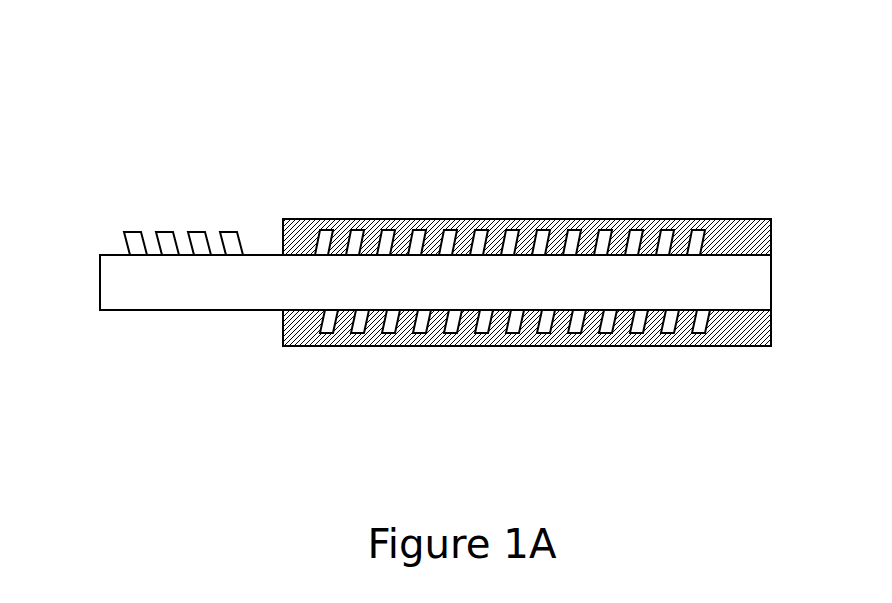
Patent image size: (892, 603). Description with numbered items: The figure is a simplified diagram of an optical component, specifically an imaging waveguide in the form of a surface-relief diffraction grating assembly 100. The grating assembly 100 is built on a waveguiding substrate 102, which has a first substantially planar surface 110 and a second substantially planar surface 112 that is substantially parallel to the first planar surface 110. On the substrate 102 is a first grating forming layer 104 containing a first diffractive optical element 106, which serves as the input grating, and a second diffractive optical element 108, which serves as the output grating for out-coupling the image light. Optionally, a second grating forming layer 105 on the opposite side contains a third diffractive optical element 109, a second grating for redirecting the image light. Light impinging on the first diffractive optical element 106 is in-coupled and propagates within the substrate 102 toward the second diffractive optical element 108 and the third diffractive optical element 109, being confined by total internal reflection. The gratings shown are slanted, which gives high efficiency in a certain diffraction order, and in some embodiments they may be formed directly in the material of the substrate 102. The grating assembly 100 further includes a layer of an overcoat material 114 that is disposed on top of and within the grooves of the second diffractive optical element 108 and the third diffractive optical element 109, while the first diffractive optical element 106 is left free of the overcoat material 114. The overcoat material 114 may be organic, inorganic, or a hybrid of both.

The surface-relief diffraction grating assembly 100 is at (647, 122).
The substrate 102 is at (455, 297).
The first grating forming layer 104 is at (370, 199).
The second grating forming layer 105 is at (370, 376).
The first diffractive optical element 106 is at (122, 193).
The second diffractive optical element 108 is at (717, 193).
The third diffractive optical element 109 is at (717, 372).
The first substantially planar surface 110 is at (262, 252).
The second substantially planar surface 112 is at (208, 311).
The overcoat material 114 is at (753, 238).